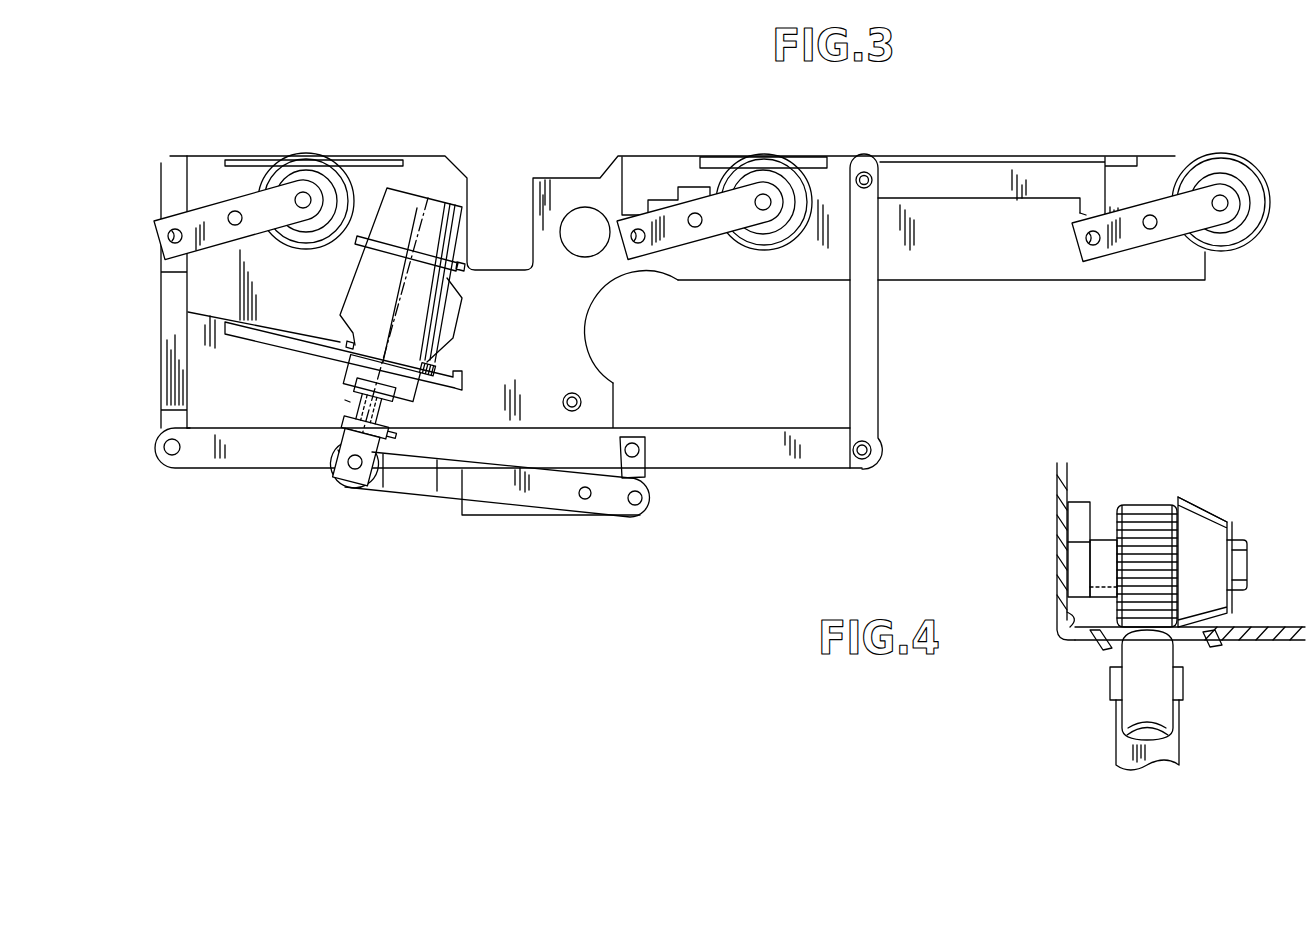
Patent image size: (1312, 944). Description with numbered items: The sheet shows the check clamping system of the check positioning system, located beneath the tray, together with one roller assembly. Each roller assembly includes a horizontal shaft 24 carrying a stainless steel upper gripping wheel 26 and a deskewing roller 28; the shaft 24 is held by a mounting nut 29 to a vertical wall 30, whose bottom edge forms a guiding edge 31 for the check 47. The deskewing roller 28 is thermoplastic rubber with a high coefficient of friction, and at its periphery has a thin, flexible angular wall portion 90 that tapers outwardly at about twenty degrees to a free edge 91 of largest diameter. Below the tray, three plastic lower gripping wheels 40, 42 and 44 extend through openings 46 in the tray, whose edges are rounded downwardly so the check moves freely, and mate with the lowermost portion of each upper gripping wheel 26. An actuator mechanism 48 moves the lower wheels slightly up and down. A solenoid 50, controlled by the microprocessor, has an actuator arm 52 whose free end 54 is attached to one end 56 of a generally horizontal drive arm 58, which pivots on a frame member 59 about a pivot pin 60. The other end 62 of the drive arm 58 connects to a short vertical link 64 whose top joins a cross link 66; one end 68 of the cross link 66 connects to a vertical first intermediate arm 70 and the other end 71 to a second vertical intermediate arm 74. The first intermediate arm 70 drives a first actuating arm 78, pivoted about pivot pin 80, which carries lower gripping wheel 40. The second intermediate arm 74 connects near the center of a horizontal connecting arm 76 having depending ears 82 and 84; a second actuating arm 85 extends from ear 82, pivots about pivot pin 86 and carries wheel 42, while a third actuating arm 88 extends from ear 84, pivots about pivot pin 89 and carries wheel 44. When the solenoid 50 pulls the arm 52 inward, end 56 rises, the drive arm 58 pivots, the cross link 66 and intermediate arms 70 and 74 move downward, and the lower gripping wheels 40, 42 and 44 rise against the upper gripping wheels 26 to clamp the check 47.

In FIG. 4, the horizontal shaft 24 is at (1100, 540).
In FIG. 4, the upper gripping wheel 26 is at (1158, 505).
In FIG. 4, the deskewing roller 28 is at (1218, 578).
In FIG. 4, the mounting nut 29 is at (1078, 505).
In FIG. 4, the vertical wall 30 is at (1055, 497).
In FIG. 4, the guiding edge 31 is at (1068, 614).
In FIG. 3, the lower gripping wheel 40 is at (316, 156).
In FIG. 4, the lower gripping wheel 40 is at (1173, 653).
In FIG. 3, the lower gripping wheel 42 is at (782, 154).
In FIG. 3, the lower gripping wheel 44 is at (1255, 190).
In FIG. 4, the opening 46 is at (1215, 648).
In FIG. 4, the check 47 is at (1100, 647).
In FIG. 3, the actuator mechanism 48 is at (917, 350).
In FIG. 3, the solenoid 50 is at (462, 329).
In FIG. 3, the actuator arm 52 is at (353, 404).
In FIG. 3, the free end 54 is at (335, 468).
In FIG. 3, the end of drive arm 56 is at (358, 482).
In FIG. 3, the drive arm 58 is at (445, 490).
In FIG. 3, the frame member 59 is at (608, 400).
In FIG. 3, the pivot pin 60 is at (584, 502).
In FIG. 3, the other end of drive arm 62 is at (645, 510).
In FIG. 3, the vertical link 64 is at (645, 475).
In FIG. 3, the cross link 66 is at (765, 466).
In FIG. 3, the end of cross link 68 is at (172, 460).
In FIG. 3, the first intermediate arm 70 is at (165, 347).
In FIG. 3, the other end of cross link 71 is at (867, 469).
In FIG. 3, the second intermediate arm 74 is at (878, 310).
In FIG. 3, the horizontal connecting arm 76 is at (982, 185).
In FIG. 3, the first actuating arm 78 is at (215, 205).
In FIG. 3, the pivot pin 80 is at (235, 211).
In FIG. 3, the depending ear 82 is at (625, 203).
In FIG. 3, the depending ear 84 is at (1075, 210).
In FIG. 3, the second actuating arm 85 is at (688, 238).
In FIG. 3, the pivot pin 86 is at (695, 212).
In FIG. 3, the third actuating arm 88 is at (1128, 210).
In FIG. 3, the pivot pin 89 is at (1150, 214).
In FIG. 4, the angular wall portion 90 is at (1205, 510).
In FIG. 4, the free edge 91 is at (1182, 498).